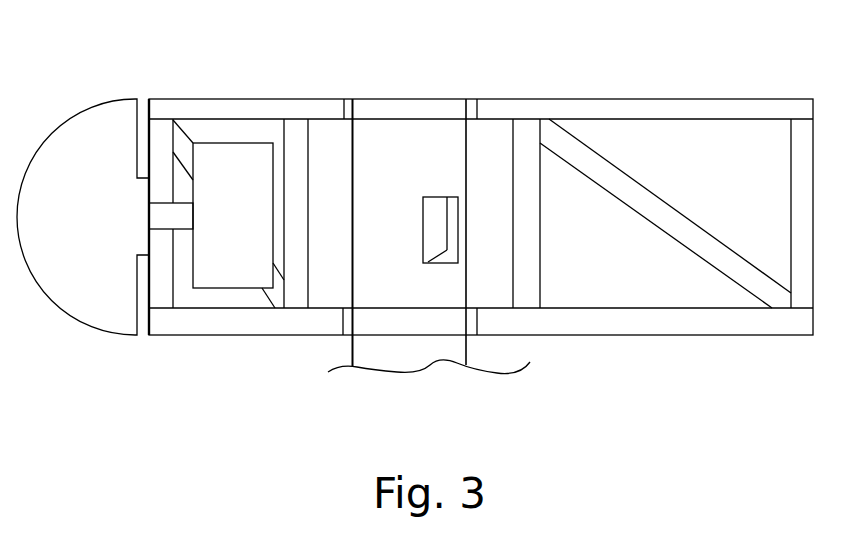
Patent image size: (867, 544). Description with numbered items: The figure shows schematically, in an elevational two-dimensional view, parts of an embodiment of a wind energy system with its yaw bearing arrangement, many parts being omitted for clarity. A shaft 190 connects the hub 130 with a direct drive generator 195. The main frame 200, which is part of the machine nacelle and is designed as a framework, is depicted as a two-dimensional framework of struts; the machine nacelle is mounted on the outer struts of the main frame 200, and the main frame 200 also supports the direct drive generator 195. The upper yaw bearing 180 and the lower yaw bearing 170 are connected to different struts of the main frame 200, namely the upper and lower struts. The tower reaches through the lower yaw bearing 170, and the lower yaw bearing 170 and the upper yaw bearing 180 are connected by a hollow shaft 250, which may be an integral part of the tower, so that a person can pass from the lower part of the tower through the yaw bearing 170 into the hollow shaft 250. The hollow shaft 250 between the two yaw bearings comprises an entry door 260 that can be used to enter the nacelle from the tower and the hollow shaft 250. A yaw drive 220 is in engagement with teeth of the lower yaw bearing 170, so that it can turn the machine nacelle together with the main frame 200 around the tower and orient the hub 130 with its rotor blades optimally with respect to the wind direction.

The hub 130 is at (106, 102).
The shaft 190 is at (163, 203).
The direct drive generator 195 is at (228, 143).
The upper yaw bearing 180 is at (343, 90).
The lower yaw bearing 170 is at (344, 341).
The hollow shaft 250 is at (403, 288).
The entry door 260 is at (441, 247).
The yaw drive 220 is at (652, 272).
The main frame 200 is at (695, 334).